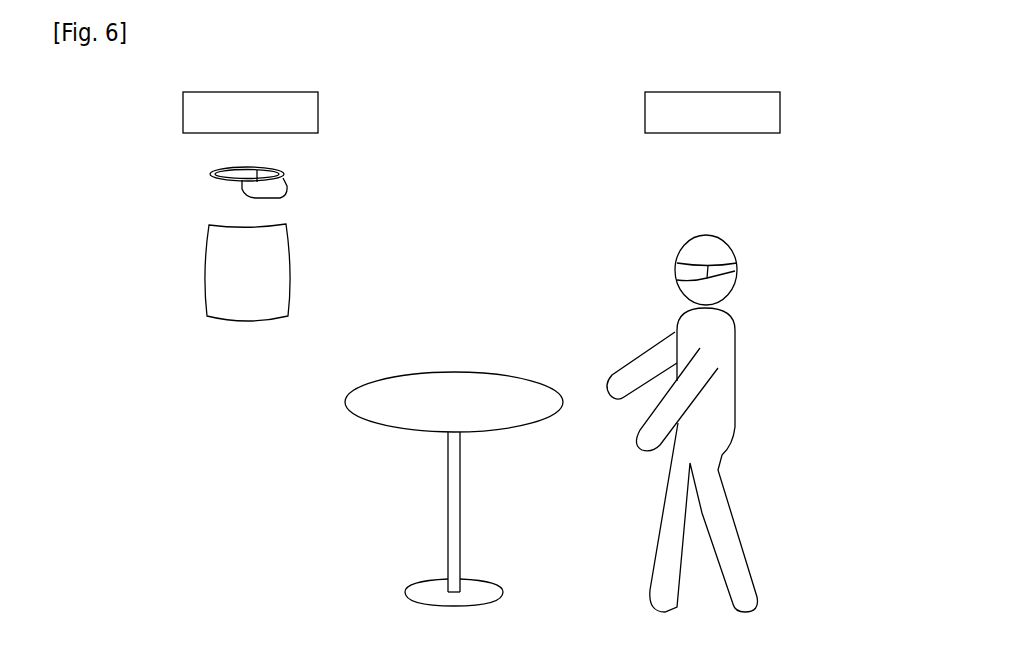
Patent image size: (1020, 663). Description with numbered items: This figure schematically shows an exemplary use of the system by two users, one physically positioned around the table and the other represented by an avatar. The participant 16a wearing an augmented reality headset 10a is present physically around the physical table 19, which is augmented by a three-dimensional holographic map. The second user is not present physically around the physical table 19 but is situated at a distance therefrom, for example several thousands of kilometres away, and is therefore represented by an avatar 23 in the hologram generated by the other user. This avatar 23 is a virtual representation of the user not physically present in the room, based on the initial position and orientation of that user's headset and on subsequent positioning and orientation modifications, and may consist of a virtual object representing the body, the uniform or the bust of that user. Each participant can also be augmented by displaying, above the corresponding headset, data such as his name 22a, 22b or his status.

The name 22b is at (183, 111).
The name 22a is at (781, 112).
The avatar 23 is at (190, 191).
The participant 16a is at (750, 409).
The augmented reality headset 10a is at (719, 287).
The physical table 19 is at (458, 607).